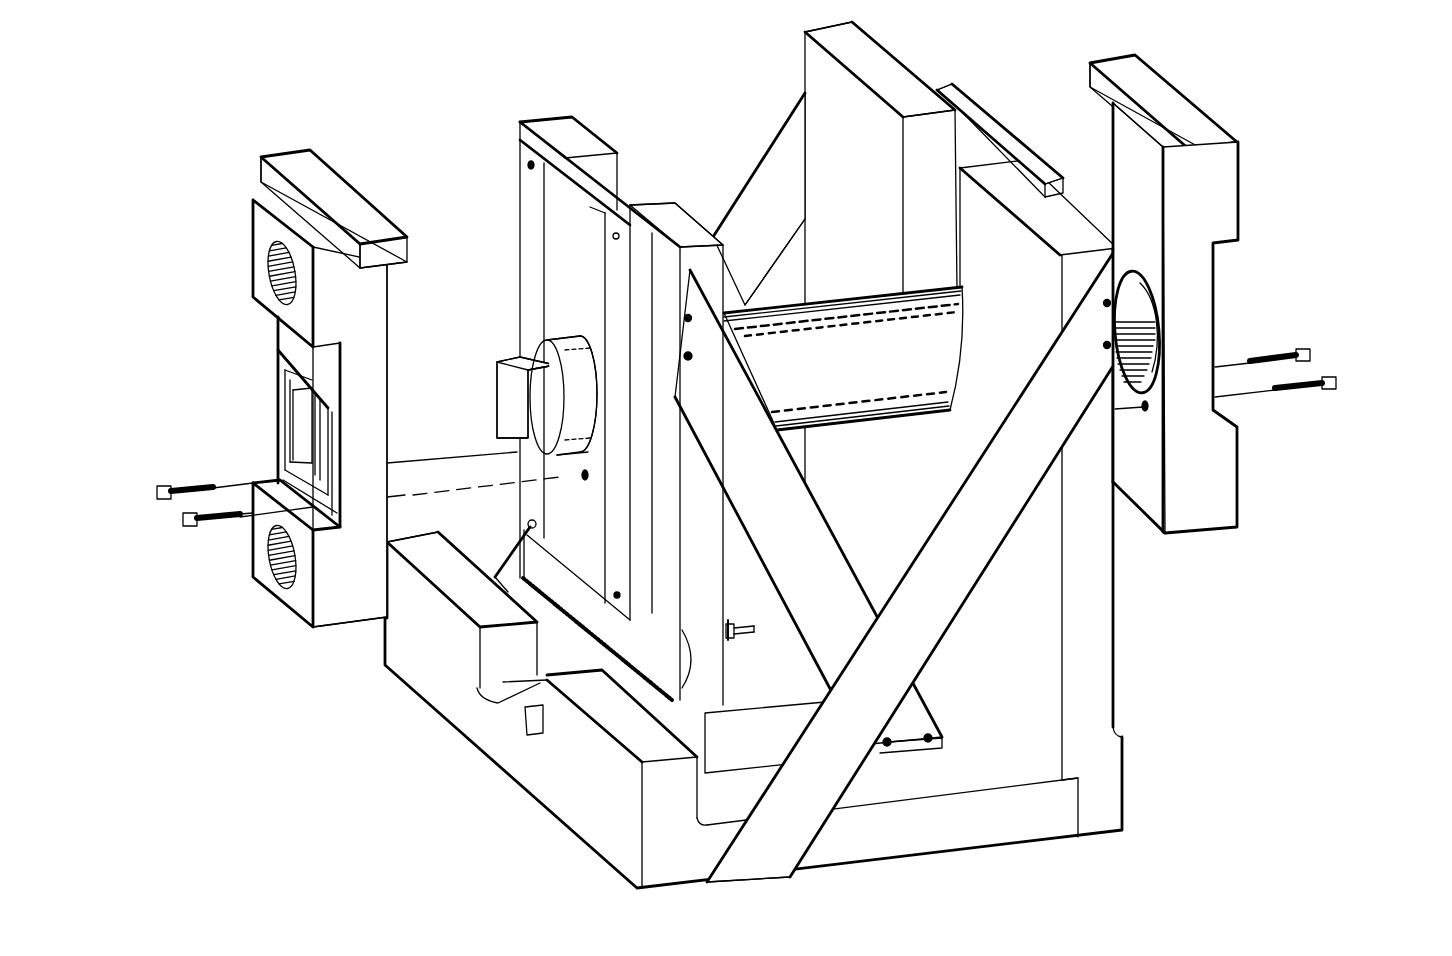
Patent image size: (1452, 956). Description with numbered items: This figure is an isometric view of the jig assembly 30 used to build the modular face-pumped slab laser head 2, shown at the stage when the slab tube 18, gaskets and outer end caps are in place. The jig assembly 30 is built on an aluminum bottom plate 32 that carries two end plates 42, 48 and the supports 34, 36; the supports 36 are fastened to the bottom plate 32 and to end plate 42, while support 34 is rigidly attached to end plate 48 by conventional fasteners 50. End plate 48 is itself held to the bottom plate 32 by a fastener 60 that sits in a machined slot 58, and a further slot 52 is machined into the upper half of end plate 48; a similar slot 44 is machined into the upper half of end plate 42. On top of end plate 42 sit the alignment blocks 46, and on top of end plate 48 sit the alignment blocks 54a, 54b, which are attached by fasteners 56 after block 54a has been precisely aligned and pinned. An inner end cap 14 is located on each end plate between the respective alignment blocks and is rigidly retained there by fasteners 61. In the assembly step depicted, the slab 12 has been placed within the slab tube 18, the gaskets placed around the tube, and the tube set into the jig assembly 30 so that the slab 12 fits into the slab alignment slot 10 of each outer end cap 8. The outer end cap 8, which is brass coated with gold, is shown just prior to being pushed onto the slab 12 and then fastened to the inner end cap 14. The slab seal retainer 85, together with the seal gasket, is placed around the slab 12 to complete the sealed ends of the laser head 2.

The modular face-pumped slab laser head 2 is at (1305, 182).
The outer end cap 8 is at (300, 158).
The slab alignment slot 10 is at (277, 413).
The slab 12 is at (507, 403).
The inner end cap 14 is at (1015, 144).
The slab tube 18 is at (843, 358).
The jig assembly 30 is at (1160, 741).
The bottom plate 32 is at (570, 797).
The support 34 is at (808, 521).
The support 36 is at (853, 323).
The end plate 42 is at (1090, 678).
The slot 44 is at (930, 208).
The alignment blocks 46 is at (945, 92).
The end plate 48 is at (563, 135).
The fasteners 50 is at (689, 318).
The slot 52 is at (623, 188).
The alignment block 54a is at (537, 327).
The alignment block 54b is at (613, 252).
The fasteners 56 is at (530, 165).
The slot 58 is at (738, 625).
The fastener 60 is at (732, 640).
The fasteners 61 is at (1310, 375).
The slab seal retainer 85 is at (277, 453).